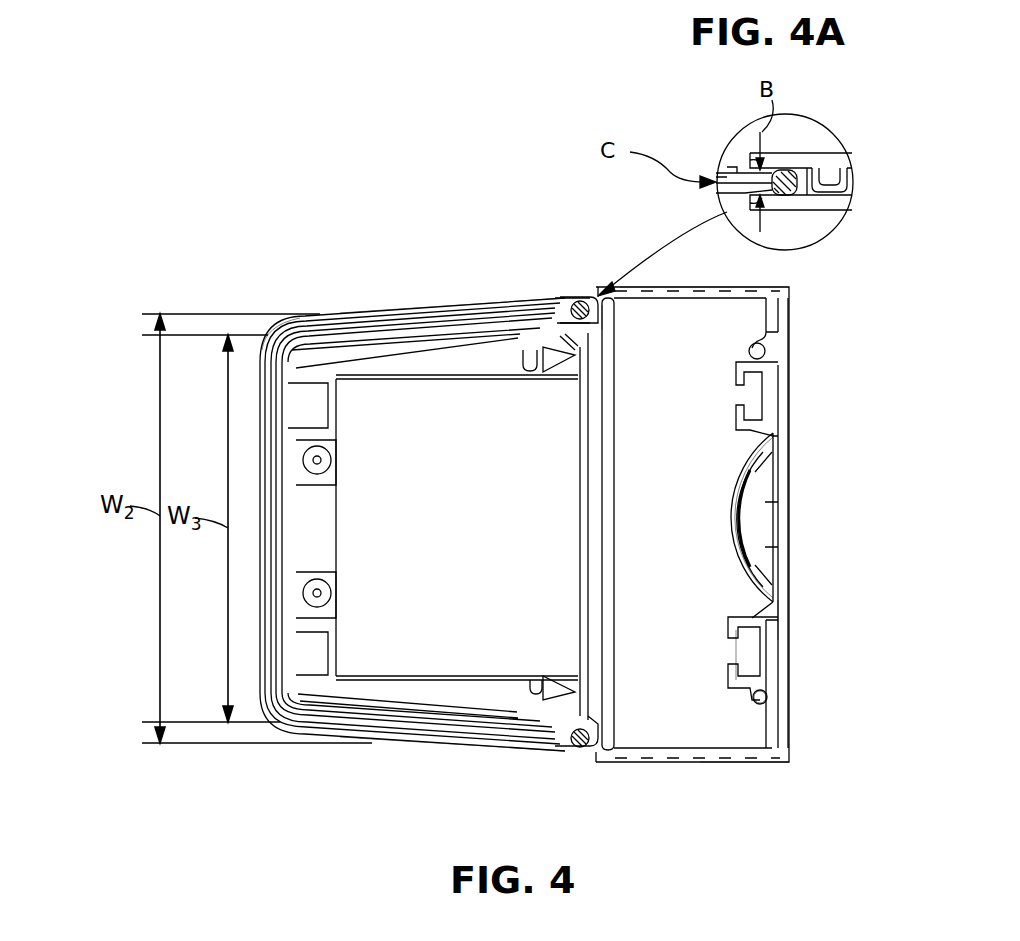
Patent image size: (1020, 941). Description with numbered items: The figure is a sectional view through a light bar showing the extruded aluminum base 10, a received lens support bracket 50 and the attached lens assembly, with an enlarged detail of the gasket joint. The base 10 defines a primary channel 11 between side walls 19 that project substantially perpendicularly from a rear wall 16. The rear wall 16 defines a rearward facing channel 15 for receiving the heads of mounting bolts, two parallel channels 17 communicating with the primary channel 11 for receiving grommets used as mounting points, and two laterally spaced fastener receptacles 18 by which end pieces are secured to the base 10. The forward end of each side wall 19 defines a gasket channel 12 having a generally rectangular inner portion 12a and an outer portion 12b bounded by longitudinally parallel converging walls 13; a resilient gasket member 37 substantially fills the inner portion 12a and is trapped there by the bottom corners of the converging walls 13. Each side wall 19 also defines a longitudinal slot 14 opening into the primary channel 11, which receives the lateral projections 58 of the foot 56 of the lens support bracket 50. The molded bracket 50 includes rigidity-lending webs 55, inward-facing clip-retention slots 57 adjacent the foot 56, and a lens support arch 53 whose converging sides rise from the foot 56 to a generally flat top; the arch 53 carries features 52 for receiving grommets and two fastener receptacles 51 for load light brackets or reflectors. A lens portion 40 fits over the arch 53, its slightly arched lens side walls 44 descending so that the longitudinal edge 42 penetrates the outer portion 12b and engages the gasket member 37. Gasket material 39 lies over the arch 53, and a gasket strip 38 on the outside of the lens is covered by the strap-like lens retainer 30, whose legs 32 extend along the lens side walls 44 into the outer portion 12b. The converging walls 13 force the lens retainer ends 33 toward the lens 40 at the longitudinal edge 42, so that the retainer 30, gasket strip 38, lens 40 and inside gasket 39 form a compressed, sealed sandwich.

In FIG. 4, the base 10 is at (745, 774).
In FIG. 4, the primary channel 11 is at (692, 524).
In FIG. 4, the gasket channel 12 is at (570, 286).
In FIG. 4A, the gasket channel 12 is at (801, 181).
In FIG. 4A, the gasket channel inner portion 12a is at (790, 152).
In FIG. 4A, the gasket channel outer portion 12b is at (782, 211).
In FIG. 4A, the converging walls 13 is at (750, 160).
In FIG. 4A, the longitudinal slot 14 is at (820, 196).
In FIG. 4, the rearward facing channel 15 is at (770, 527).
In FIG. 4, the rear wall 16 is at (778, 610).
In FIG. 4, the parallel channels 17 is at (752, 660).
In FIG. 4, the fastener receptacles 18 is at (755, 702).
In FIG. 4, the side walls 19 is at (660, 298).
In FIG. 4, the lens retainer 30 is at (246, 374).
In FIG. 4A, the lens retainer 30 is at (726, 168).
In FIG. 4, the legs 32 is at (445, 310).
In FIG. 4, the lens retainer ends 33 is at (560, 296).
In FIG. 4, the gasket member 37 is at (586, 290).
In FIG. 4, the gasket material strip 38 is at (252, 394).
In FIG. 4, the gasket material 39 is at (268, 461).
In FIG. 4, the lens portion 40 is at (260, 427).
In FIG. 4, the longitudinal edge 42 is at (580, 748).
In FIG. 4, the lens side walls 44 is at (432, 740).
In FIG. 4, the lens support bracket 50 is at (443, 658).
In FIG. 4, the fastener receptacles 51 is at (325, 460).
In FIG. 4, the grommet-receiving features 52 is at (322, 398).
In FIG. 4, the lens support arch 53 is at (345, 345).
In FIG. 4, the webs 55 is at (428, 362).
In FIG. 4, the foot 56 is at (592, 506).
In FIG. 4, the clip-retention slots 57 is at (530, 375).
In FIG. 4, the lateral projections 58 is at (604, 318).